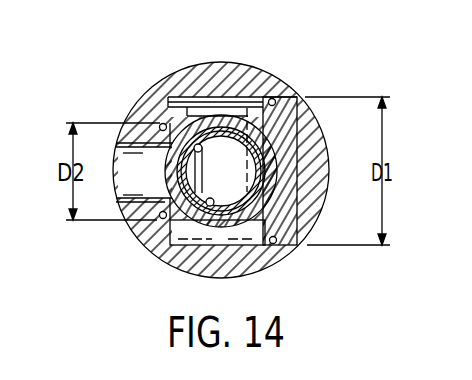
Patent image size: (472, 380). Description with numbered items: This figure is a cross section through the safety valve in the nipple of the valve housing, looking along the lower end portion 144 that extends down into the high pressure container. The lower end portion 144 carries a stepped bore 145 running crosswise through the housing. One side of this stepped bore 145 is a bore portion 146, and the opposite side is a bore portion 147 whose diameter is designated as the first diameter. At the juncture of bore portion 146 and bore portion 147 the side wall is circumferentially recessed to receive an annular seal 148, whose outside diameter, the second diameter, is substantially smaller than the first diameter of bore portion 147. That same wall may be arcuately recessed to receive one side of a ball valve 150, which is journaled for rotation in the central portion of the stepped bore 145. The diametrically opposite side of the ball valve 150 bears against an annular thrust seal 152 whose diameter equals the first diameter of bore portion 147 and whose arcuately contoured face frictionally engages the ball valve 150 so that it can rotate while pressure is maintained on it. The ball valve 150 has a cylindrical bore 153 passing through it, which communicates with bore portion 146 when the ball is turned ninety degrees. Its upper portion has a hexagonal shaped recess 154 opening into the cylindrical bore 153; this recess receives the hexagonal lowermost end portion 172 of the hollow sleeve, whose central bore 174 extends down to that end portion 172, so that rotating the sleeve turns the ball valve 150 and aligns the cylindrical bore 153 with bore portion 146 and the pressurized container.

The lower end portion 144 is at (147, 252).
The stepped bore 145 is at (309, 224).
The bore portion 146 is at (134, 150).
The bore portion 147 is at (310, 118).
The annular seal 148 is at (172, 138).
The ball valve 150 is at (302, 142).
The annular thrust seal 152 is at (268, 191).
The cylindrical bore 153 is at (214, 72).
The hexagonal shaped recess 154 is at (207, 196).
The lowermost end portion 172 is at (225, 133).
The central bore 174 is at (198, 147).